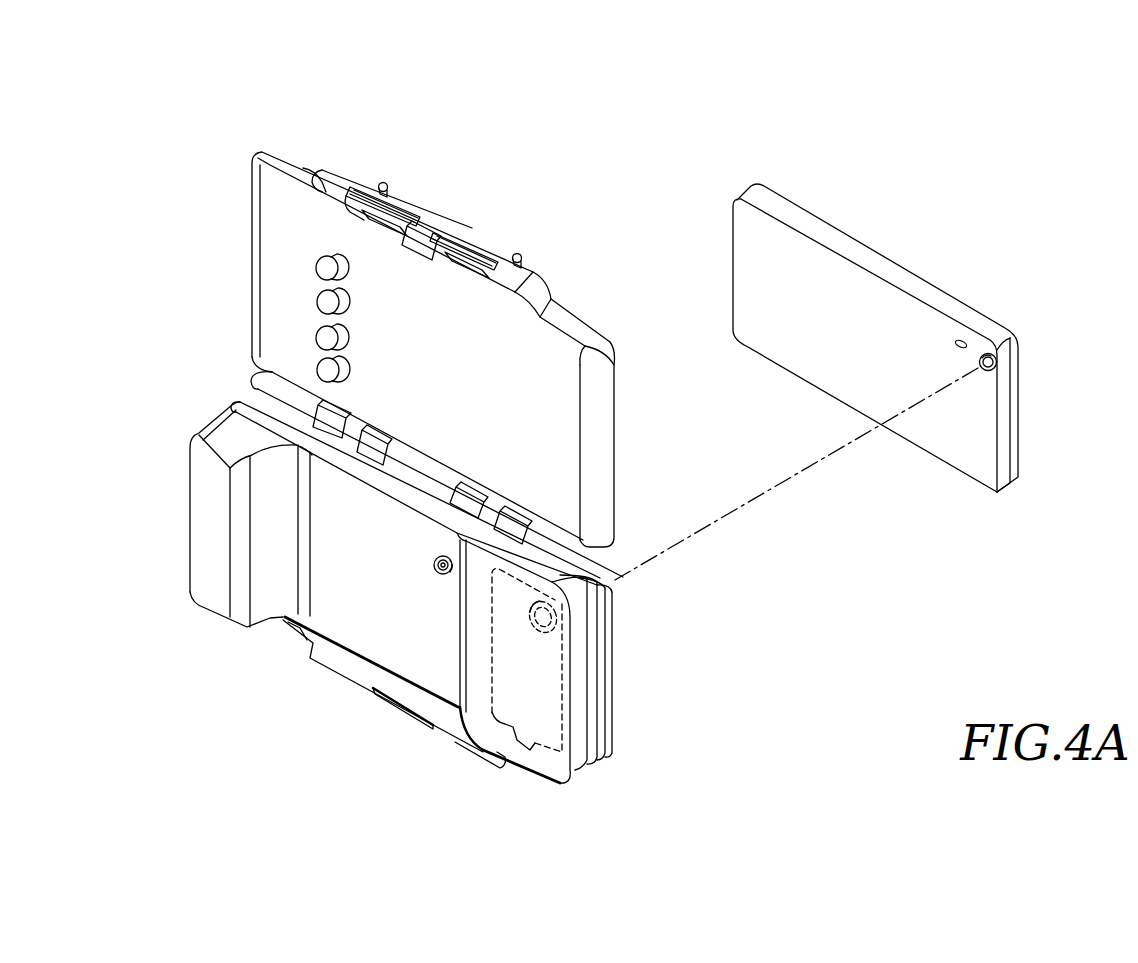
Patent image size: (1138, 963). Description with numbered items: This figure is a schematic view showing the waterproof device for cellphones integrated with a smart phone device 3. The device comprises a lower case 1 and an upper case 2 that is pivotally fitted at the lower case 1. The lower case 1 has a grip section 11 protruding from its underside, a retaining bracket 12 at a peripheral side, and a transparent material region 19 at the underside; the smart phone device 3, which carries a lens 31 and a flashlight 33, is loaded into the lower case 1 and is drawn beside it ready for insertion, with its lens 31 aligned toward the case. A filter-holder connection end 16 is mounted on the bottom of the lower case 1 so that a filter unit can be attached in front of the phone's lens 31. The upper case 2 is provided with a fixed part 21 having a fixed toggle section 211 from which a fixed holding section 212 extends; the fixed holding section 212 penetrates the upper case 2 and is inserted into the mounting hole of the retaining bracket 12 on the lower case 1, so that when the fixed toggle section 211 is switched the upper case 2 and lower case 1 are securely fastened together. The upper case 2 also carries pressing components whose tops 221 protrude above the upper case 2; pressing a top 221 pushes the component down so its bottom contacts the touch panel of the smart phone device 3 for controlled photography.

The lower case 1 is at (217, 420).
The grip section 11 is at (210, 537).
The retaining bracket 12 is at (315, 642).
The filter-holder connection end 16 is at (435, 565).
The transparent material region 19 is at (477, 662).
The upper case 2 is at (597, 453).
The fixed part 21 is at (387, 62).
The fixed toggle section 211 is at (353, 197).
The fixed holding section 212 is at (383, 183).
The top 221 is at (322, 267).
The smart phone device 3 is at (870, 255).
The lens 31 is at (995, 372).
The flashlight 33 is at (958, 340).